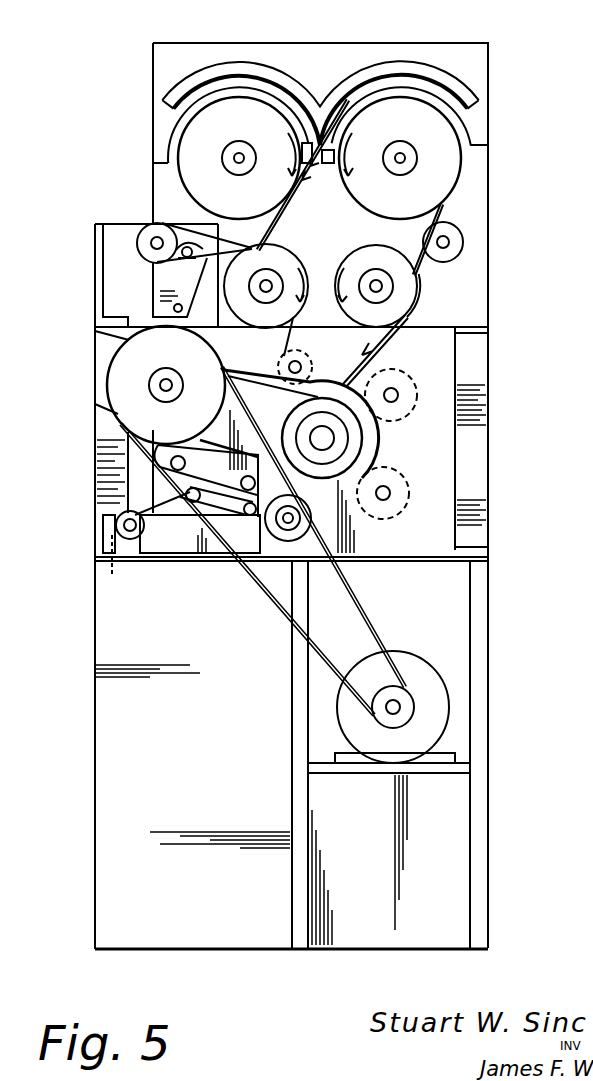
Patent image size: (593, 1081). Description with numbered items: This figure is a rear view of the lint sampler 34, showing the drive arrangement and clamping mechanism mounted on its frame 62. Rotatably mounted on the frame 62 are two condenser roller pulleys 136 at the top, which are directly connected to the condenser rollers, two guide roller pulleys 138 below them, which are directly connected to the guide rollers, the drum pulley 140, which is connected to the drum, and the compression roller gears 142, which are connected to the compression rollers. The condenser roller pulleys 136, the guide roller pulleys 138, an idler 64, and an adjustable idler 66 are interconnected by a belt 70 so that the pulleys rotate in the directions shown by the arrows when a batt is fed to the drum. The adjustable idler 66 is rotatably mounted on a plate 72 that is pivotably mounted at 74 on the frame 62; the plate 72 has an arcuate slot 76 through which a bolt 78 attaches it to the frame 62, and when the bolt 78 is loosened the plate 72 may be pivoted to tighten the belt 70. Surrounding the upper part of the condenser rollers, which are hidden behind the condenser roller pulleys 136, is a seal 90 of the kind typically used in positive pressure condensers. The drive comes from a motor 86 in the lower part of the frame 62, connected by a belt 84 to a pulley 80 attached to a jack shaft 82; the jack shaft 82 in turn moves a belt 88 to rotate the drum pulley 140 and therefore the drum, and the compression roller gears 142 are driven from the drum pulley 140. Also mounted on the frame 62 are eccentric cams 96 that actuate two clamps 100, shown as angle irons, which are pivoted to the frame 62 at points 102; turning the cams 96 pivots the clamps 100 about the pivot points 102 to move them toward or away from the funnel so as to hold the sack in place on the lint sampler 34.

The lint sampler 34 is at (72, 571).
The frame 62 is at (482, 604).
The idler 64 is at (443, 263).
The adjustable idler 66 is at (143, 250).
The belt 70 is at (240, 243).
The plate 72 is at (153, 302).
The pivot mounting 74 is at (183, 308).
The arcuate slot 76 is at (200, 251).
The bolt 78 is at (187, 258).
The pulley 80 is at (180, 428).
The jack shaft 82 is at (158, 369).
The belt 84 is at (260, 590).
The motor 86 is at (415, 663).
The belt 88 is at (249, 366).
The seal 90 is at (285, 82).
The eccentric cams 96 is at (115, 512).
The clamps 100 is at (162, 541).
The pivot points 102 is at (113, 553).
The condenser roller pulleys 136 is at (224, 194).
The guide roller pulleys 138 is at (358, 253).
The drum pulley 140 is at (368, 438).
The compression roller gears 142 is at (398, 375).